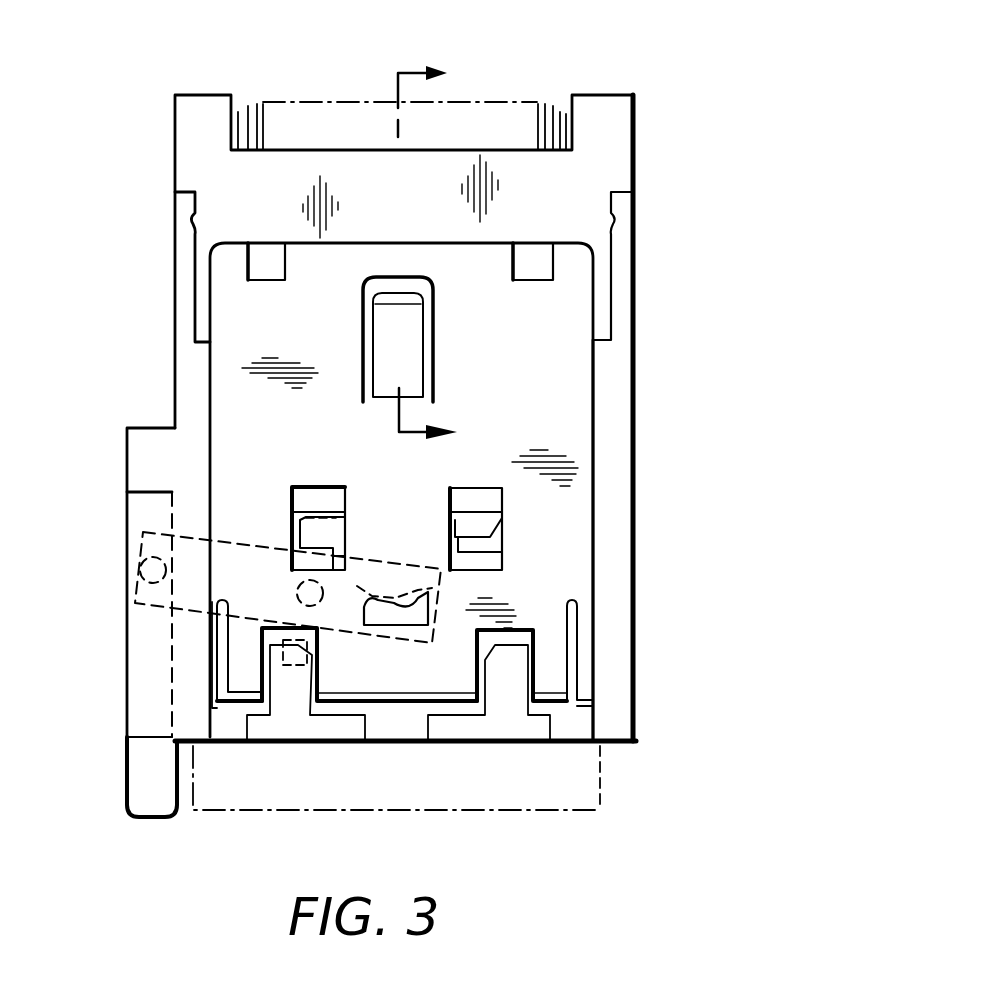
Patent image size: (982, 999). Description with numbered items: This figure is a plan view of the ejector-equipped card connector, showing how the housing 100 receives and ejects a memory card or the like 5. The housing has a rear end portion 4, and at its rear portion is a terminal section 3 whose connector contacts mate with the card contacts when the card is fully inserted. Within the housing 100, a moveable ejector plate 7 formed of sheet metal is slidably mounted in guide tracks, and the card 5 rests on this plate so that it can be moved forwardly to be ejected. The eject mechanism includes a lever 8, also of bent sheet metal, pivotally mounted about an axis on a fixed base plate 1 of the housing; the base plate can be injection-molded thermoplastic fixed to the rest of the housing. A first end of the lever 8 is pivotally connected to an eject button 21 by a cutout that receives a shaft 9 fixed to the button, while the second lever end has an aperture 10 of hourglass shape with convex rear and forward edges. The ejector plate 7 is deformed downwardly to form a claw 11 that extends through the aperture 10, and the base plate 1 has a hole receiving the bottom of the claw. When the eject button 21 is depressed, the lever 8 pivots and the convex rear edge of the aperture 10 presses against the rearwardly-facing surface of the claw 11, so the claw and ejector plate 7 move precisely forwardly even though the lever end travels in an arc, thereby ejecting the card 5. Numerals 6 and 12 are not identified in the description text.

The base plate 1 is at (580, 718).
The terminal section 3 is at (553, 110).
The rear end portion 4 is at (612, 128).
The memory card 5 is at (600, 775).
The side wall 6 is at (147, 665).
The ejector plate 7 is at (572, 515).
The lever 8 is at (252, 545).
The shaft 9 is at (145, 566).
The aperture 10 is at (362, 606).
The claw 11 is at (393, 612).
The recess 12 is at (408, 330).
The eject button 21 is at (147, 767).
The housing 100 is at (692, 594).